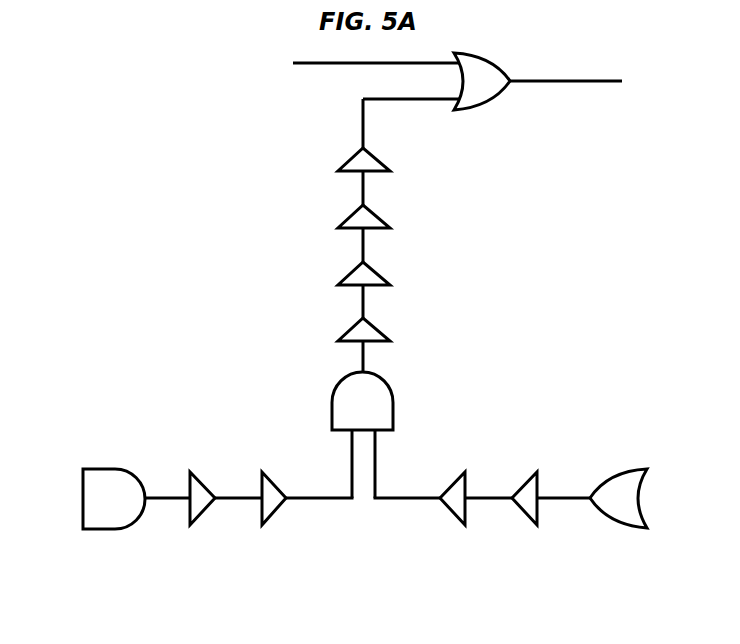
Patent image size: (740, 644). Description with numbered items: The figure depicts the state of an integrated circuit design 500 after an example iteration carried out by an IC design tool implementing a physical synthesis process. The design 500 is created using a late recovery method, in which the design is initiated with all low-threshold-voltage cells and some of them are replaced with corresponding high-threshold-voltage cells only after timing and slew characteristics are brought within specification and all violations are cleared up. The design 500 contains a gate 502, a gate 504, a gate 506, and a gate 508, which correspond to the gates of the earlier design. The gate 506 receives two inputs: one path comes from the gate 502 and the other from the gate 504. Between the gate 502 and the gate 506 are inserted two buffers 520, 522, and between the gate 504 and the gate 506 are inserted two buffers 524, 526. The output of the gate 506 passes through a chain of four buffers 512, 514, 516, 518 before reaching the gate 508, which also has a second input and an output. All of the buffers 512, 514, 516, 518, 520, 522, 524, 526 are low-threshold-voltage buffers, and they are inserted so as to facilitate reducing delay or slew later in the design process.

The design 500 is at (94, 112).
The gate 502 is at (604, 508).
The gate 504 is at (100, 508).
The gate 506 is at (350, 410).
The gate 508 is at (470, 90).
The buffer 512 is at (302, 175).
The buffer 514 is at (302, 231).
The buffer 516 is at (302, 287).
The buffer 518 is at (302, 343).
The buffer 520 is at (444, 471).
The buffer 522 is at (519, 471).
The buffer 524 is at (255, 471).
The buffer 526 is at (185, 471).